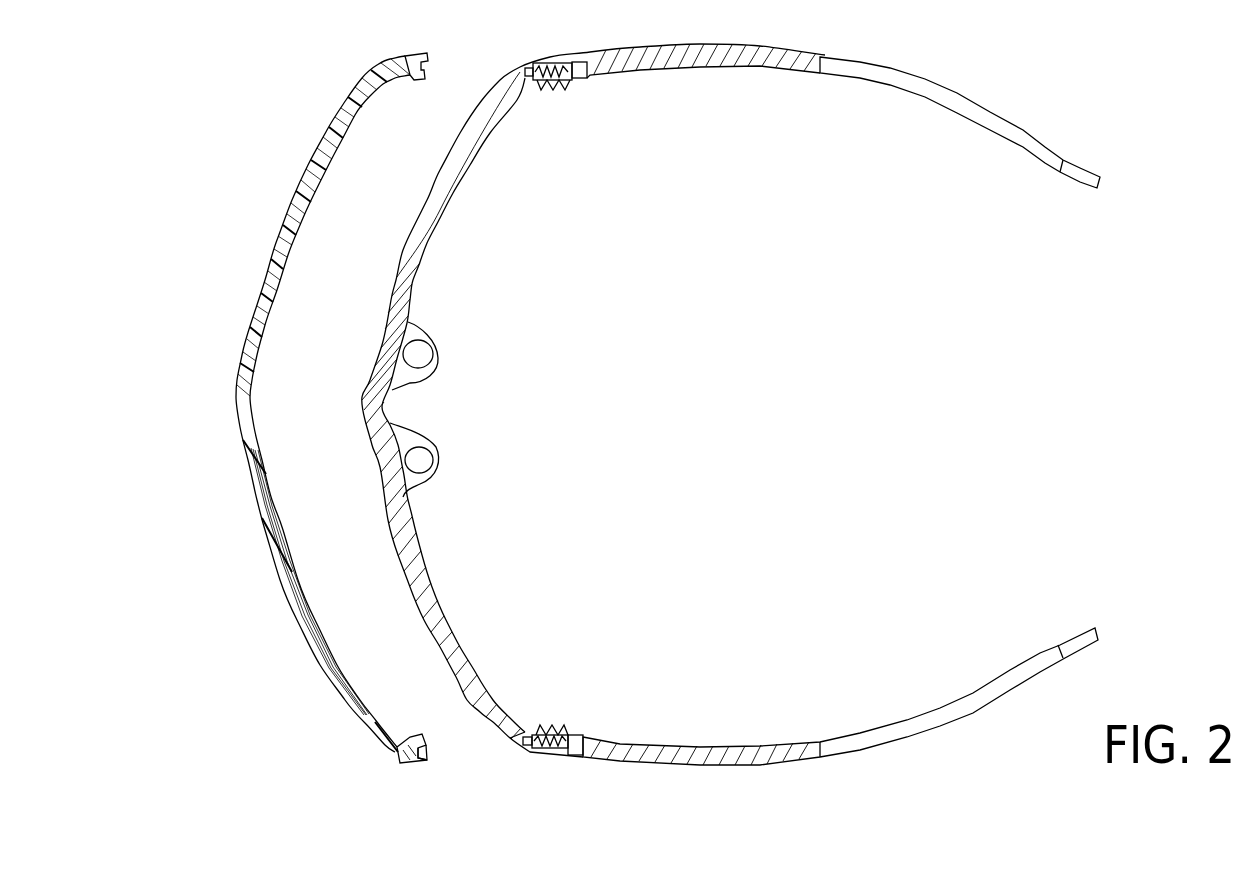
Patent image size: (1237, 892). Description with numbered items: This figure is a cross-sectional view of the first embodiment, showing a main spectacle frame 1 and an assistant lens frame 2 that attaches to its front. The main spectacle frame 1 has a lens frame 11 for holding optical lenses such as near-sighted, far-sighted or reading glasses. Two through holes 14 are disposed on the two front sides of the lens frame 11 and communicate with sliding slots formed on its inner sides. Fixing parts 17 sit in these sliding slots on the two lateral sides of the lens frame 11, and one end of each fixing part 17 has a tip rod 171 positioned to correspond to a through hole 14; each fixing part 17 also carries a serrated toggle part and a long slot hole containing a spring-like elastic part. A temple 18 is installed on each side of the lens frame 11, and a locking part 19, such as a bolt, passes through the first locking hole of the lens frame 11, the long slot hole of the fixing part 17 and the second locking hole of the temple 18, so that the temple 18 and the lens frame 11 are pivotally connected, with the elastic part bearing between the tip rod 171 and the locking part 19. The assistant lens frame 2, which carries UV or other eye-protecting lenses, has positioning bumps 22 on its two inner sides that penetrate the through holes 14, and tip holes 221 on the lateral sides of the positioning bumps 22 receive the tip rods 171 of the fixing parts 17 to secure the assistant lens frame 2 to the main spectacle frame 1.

The main spectacle frame 1 is at (689, 70).
The lens frame 11 is at (413, 262).
The through hole 14 is at (520, 750).
The fixing part 17 is at (550, 735).
The tip rod 171 is at (530, 728).
The temple 18 is at (678, 757).
The locking part 19 is at (560, 747).
The assistant lens frame 2 is at (258, 478).
The positioning bump 22 is at (398, 762).
The tip hole 221 is at (425, 742).